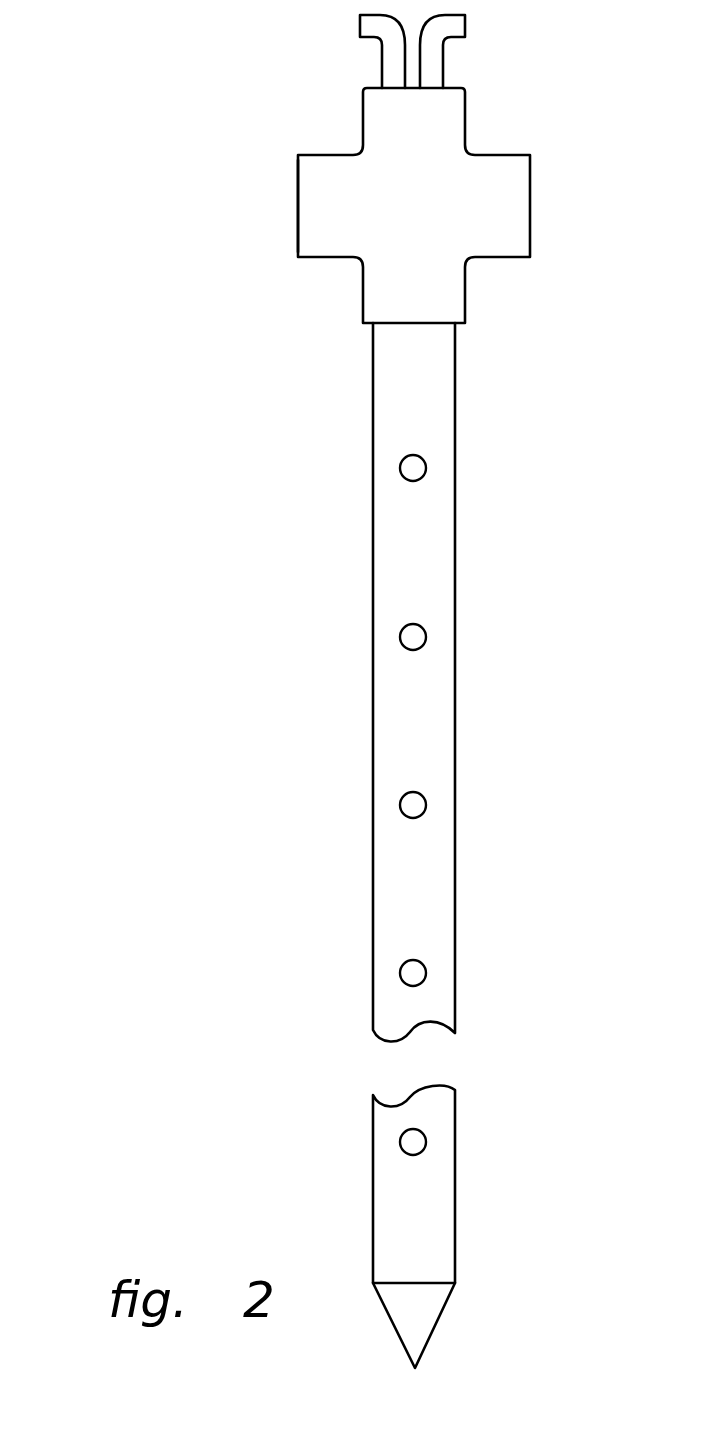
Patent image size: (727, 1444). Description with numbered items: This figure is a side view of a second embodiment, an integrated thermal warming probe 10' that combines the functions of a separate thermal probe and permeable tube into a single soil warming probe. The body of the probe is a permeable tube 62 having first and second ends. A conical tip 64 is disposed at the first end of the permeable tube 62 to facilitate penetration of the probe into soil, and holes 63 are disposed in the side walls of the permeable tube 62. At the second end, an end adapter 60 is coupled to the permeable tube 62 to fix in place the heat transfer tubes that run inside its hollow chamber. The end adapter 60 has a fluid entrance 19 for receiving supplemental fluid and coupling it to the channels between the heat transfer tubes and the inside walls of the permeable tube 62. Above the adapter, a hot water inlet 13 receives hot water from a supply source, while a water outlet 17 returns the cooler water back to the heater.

The integrated thermal warming probe 10' is at (293, 691).
The hot water inlet 13 is at (360, 25).
The water outlet 17 is at (466, 25).
The fluid entrance 19 is at (298, 198).
The end adapter 60 is at (500, 162).
The permeable tube 62 is at (373, 585).
The holes 63 is at (426, 466).
The conical tip 64 is at (432, 1320).